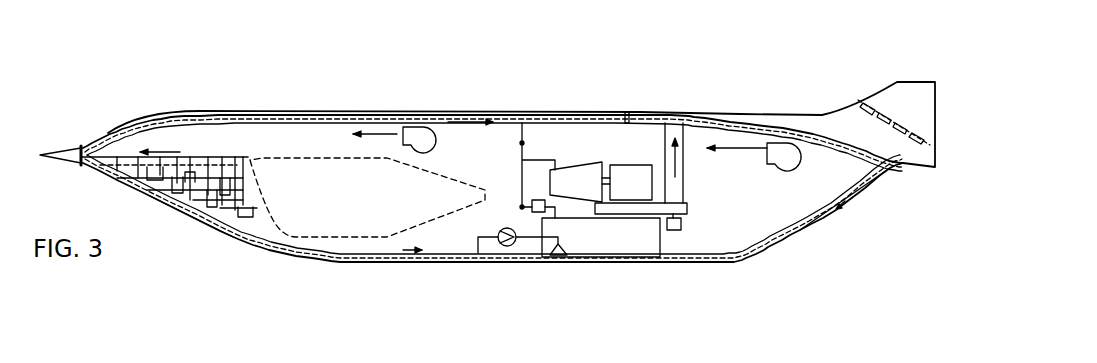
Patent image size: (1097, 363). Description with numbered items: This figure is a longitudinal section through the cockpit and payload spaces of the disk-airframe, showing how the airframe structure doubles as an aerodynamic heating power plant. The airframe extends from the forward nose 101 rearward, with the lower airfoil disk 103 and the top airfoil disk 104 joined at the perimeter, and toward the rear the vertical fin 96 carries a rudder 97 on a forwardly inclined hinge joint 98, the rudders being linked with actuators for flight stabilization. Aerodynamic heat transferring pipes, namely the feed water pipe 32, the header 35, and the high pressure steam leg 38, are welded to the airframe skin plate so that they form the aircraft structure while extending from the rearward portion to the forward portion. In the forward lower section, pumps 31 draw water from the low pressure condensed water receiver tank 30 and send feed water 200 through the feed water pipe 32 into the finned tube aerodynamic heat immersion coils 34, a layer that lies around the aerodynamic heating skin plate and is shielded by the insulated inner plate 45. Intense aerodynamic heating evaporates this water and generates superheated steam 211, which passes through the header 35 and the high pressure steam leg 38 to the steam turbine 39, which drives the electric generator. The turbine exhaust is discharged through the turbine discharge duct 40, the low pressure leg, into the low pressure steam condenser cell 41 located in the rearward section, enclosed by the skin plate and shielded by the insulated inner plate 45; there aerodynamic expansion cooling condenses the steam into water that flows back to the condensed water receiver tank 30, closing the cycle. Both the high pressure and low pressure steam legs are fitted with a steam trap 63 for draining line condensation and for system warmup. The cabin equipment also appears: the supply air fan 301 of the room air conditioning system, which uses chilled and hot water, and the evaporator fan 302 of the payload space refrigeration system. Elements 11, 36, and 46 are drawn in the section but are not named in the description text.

The fuel tank 11 is at (478, 198).
The condensed water receiver tank 30 is at (635, 240).
The pumps 31 is at (500, 230).
The feed water pipe 32 is at (392, 262).
The finned tube aerodynamic heat immersion coils 34 is at (238, 190).
The header 35 is at (231, 157).
The nose bulkhead 36 is at (57, 151).
The high pressure steam leg 38 is at (436, 112).
The steam turbine 39 is at (618, 188).
The turbine discharge duct 40 is at (684, 183).
The low pressure steam condenser cell 41 is at (682, 113).
The insulated inner plate 45 is at (303, 123).
The aft skin panel 46 is at (848, 213).
The steam trap 63 is at (537, 212).
The vertical fin 96 is at (870, 130).
The rudder 97 is at (903, 97).
The hinge joint 98 is at (870, 100).
The forward nose 101 is at (42, 159).
The lower airfoil disk 103 is at (240, 240).
The top airfoil disk 104 is at (342, 112).
The feed water 200 is at (420, 254).
The superheated steam 211 is at (423, 130).
The supply air fan 301 is at (423, 151).
The evaporator fan 302 is at (781, 170).